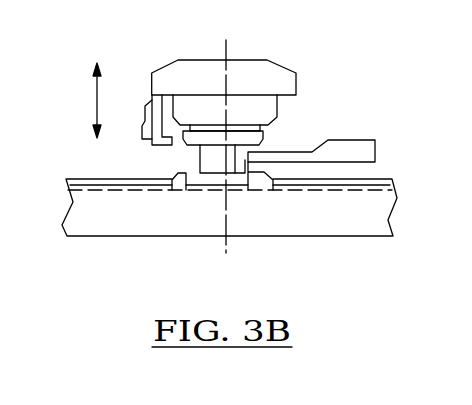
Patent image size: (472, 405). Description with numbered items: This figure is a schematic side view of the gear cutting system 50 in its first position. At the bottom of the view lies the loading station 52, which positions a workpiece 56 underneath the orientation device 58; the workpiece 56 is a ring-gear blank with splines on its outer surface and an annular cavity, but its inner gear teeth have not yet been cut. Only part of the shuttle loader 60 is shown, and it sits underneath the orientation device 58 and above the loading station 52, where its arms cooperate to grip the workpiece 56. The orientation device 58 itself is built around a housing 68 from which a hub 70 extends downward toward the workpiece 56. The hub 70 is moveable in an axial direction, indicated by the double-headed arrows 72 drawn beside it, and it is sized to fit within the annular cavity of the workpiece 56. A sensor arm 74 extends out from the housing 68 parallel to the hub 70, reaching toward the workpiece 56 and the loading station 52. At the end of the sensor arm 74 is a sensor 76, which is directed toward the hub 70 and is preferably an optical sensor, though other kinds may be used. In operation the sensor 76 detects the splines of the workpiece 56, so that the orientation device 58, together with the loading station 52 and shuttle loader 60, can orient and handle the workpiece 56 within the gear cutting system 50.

The gear cutting system 50 is at (80, 88).
The loading station 52 is at (97, 218).
The workpiece 56 is at (273, 172).
The orientation device 58 is at (279, 67).
The shuttle loader 60 is at (366, 150).
The housing 68 is at (170, 80).
The hub 70 is at (197, 140).
The arrows 72 is at (97, 110).
The sensor arm 74 is at (160, 146).
The sensor 76 is at (172, 140).